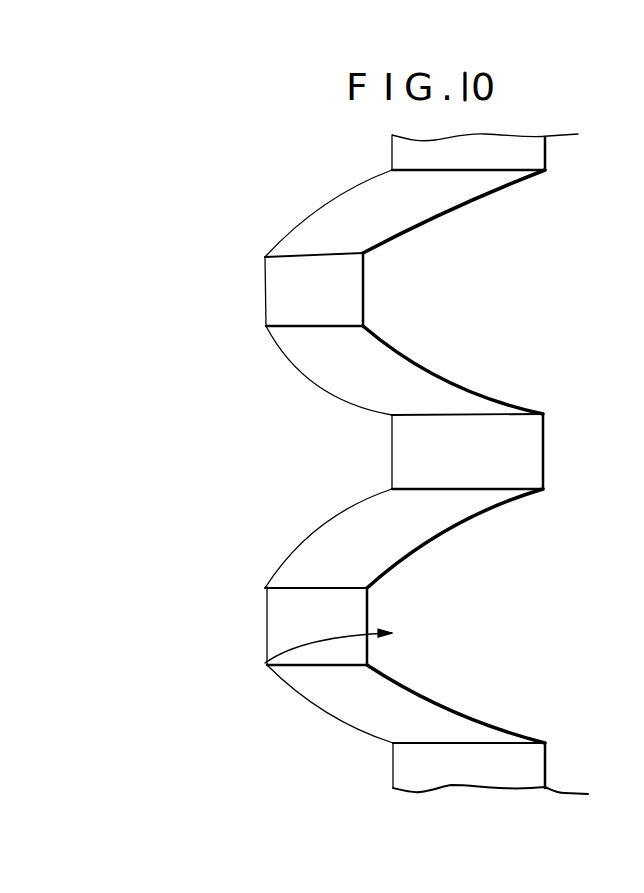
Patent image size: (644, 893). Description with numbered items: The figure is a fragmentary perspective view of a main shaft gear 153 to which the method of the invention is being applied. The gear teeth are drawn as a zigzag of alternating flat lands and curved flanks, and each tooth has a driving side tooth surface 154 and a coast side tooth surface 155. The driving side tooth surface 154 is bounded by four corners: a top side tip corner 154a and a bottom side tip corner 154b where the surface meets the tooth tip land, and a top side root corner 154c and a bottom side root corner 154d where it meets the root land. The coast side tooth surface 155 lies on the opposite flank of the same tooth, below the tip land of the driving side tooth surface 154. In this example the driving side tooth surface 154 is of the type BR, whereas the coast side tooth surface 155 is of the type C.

The main shaft gear 153 is at (267, 665).
The driving side tooth surface 154 is at (342, 535).
The top side tip corner 154a is at (367, 588).
The bottom side tip corner 154b is at (267, 587).
The top side root corner 154c is at (545, 489).
The bottom side root corner 154d is at (392, 489).
The coast side tooth surface 155 is at (360, 702).